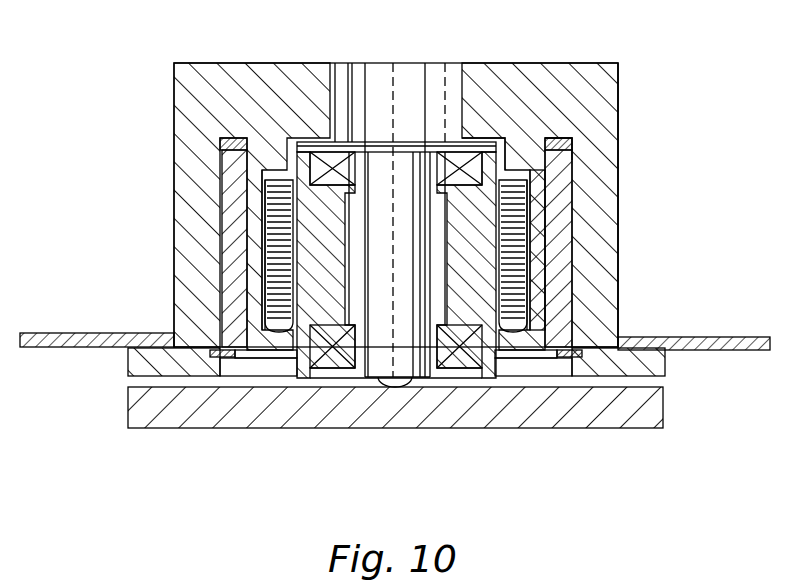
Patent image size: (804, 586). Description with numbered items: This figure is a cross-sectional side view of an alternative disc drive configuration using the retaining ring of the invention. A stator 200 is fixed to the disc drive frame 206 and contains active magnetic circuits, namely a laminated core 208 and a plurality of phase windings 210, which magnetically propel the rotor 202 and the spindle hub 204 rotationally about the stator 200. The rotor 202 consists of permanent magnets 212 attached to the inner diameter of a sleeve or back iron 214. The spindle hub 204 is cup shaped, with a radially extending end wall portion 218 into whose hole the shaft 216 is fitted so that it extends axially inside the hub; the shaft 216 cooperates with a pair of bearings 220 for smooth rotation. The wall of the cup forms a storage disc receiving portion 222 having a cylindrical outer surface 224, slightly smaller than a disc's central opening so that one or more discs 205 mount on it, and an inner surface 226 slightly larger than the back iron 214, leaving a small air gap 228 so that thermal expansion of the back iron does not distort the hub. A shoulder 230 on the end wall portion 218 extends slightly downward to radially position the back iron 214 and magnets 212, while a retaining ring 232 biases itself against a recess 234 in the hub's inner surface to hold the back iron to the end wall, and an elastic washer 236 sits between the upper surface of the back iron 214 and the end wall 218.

The stator 200 is at (529, 151).
The rotor 202 is at (540, 360).
The spindle hub 204 is at (628, 63).
The discs 205 is at (110, 333).
The disc drive frame 206 is at (490, 380).
The laminated core 208 is at (265, 248).
The phase windings 210 is at (245, 358).
The permanent magnets 212 is at (537, 318).
The back iron 214 is at (650, 334).
The shaft 216 is at (390, 63).
The radially extending end wall portion 218 is at (262, 73).
The bearings 220 is at (462, 153).
The storage disc receiving portion 222 is at (557, 306).
The outer surface 224 is at (617, 190).
The inner surface 226 is at (575, 163).
The air gap 228 is at (560, 272).
The shoulder 230 is at (540, 108).
The retaining ring 232 is at (568, 358).
The recess 234 is at (652, 367).
The elastic washer 236 is at (600, 125).